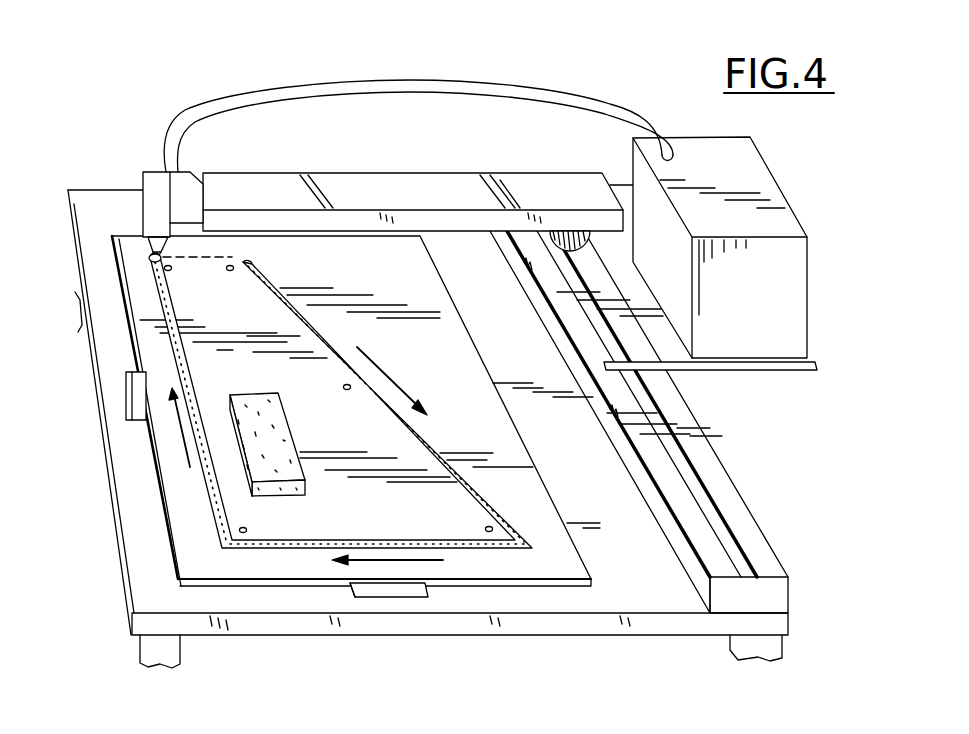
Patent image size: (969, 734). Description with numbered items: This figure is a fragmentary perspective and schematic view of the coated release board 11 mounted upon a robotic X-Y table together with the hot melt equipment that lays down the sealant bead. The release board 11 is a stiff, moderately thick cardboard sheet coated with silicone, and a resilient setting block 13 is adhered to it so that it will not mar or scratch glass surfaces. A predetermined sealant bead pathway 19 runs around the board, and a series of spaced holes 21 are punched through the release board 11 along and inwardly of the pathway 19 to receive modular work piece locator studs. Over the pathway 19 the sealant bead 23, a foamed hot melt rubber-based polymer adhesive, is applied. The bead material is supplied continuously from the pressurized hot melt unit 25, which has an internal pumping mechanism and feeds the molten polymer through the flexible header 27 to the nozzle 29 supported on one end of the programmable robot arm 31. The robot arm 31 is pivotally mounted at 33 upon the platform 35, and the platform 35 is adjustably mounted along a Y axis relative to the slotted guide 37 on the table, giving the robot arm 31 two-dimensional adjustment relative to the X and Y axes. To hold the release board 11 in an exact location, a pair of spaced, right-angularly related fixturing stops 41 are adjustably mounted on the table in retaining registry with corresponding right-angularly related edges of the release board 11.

The coated release board 11 is at (550, 508).
The setting block 13 is at (290, 430).
The sealant bead pathway 19 is at (232, 257).
The spaced holes 21 is at (486, 527).
The sealant bead 23 is at (337, 346).
The hot melt unit 25 is at (782, 191).
The flexible header 27 is at (483, 84).
The nozzle 29 is at (150, 240).
The programmable robot arm 31 is at (442, 172).
The pivotal mounting 33 is at (574, 242).
The platform 35 is at (595, 326).
The slotted guide 37 is at (742, 510).
The fixturing stops 41 is at (128, 404).